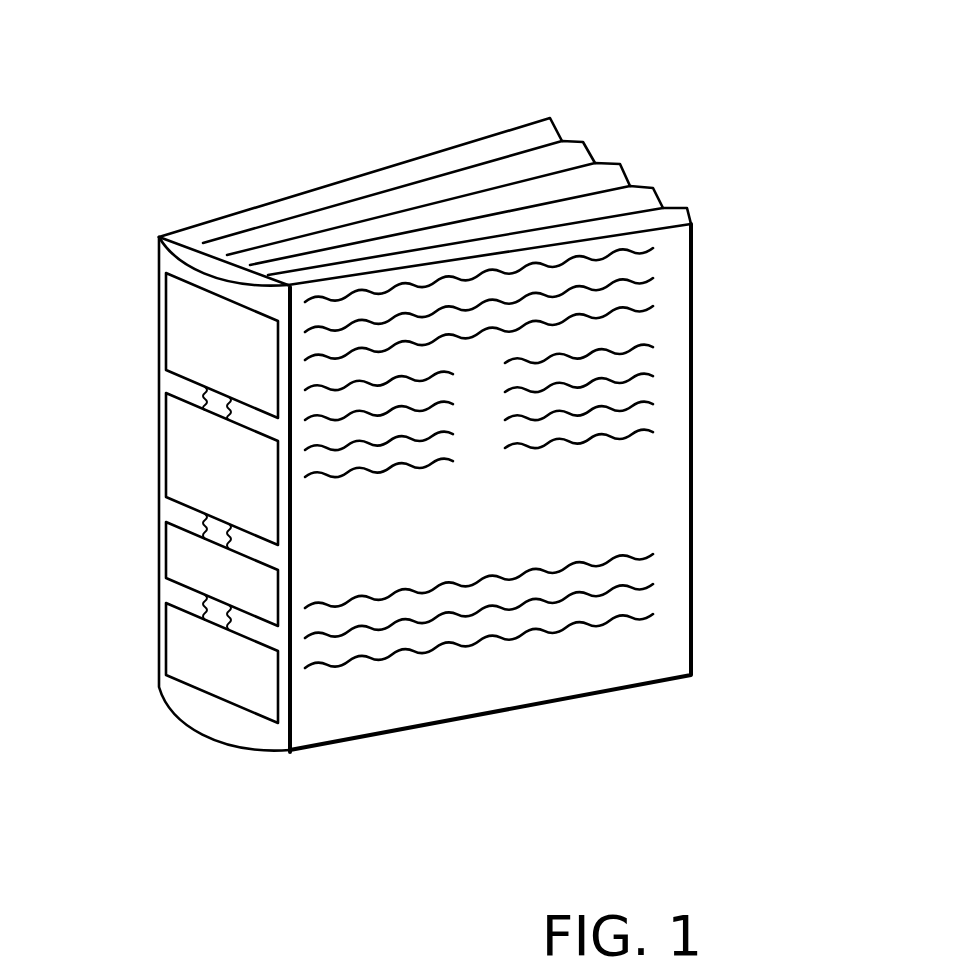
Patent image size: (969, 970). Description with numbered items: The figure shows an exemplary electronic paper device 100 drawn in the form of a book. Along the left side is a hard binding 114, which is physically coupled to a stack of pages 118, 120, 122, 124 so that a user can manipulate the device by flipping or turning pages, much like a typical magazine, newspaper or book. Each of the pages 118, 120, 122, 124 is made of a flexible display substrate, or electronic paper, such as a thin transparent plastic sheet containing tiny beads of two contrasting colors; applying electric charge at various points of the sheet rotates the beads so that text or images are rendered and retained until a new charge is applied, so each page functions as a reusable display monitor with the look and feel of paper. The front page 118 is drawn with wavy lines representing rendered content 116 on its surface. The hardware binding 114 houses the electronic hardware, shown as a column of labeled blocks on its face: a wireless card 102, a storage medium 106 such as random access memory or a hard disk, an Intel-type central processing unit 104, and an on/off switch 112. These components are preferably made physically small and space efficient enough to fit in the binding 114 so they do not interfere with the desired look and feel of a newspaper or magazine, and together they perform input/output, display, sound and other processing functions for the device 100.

The electronic paper device 100 is at (256, 107).
The wireless card 102 is at (163, 316).
The central processing unit (CPU) 104 is at (163, 545).
The storage medium 106 is at (163, 441).
The on/off switch 112 is at (163, 634).
The hard binding 114 is at (200, 248).
The display text on cover 116 is at (572, 460).
The page 118 is at (693, 219).
The page 120 is at (620, 161).
The page 122 is at (585, 139).
The page 124 is at (547, 113).